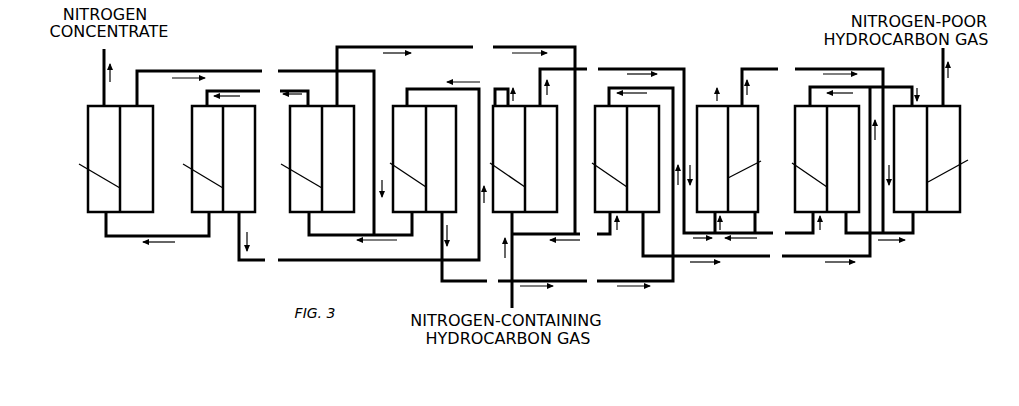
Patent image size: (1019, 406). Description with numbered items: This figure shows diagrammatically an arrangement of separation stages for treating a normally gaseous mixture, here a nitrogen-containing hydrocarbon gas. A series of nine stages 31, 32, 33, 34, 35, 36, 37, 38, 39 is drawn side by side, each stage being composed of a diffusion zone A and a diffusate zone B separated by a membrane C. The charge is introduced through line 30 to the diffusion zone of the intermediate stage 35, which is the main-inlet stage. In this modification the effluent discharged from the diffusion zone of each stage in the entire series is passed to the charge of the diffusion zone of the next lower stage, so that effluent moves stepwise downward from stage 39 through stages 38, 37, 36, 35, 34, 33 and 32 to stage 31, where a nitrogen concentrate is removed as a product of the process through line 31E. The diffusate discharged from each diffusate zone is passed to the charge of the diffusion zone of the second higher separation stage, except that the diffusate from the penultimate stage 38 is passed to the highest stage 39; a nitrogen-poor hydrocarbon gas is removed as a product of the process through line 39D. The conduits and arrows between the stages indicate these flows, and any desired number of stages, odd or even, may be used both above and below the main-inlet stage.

The charge line 30 is at (512, 296).
The separation stage 31 is at (89, 201).
The separation stage 32 is at (193, 201).
The separation stage 33 is at (291, 201).
The separation stage 34 is at (397, 205).
The intermediate stage 35 is at (545, 212).
The separation stage 36 is at (648, 212).
The separation stage 37 is at (750, 212).
The penultimate stage 38 is at (800, 212).
The separation stage 39 is at (946, 212).
The effluent line 31E is at (104, 98).
The diffusate line 39D is at (945, 92).